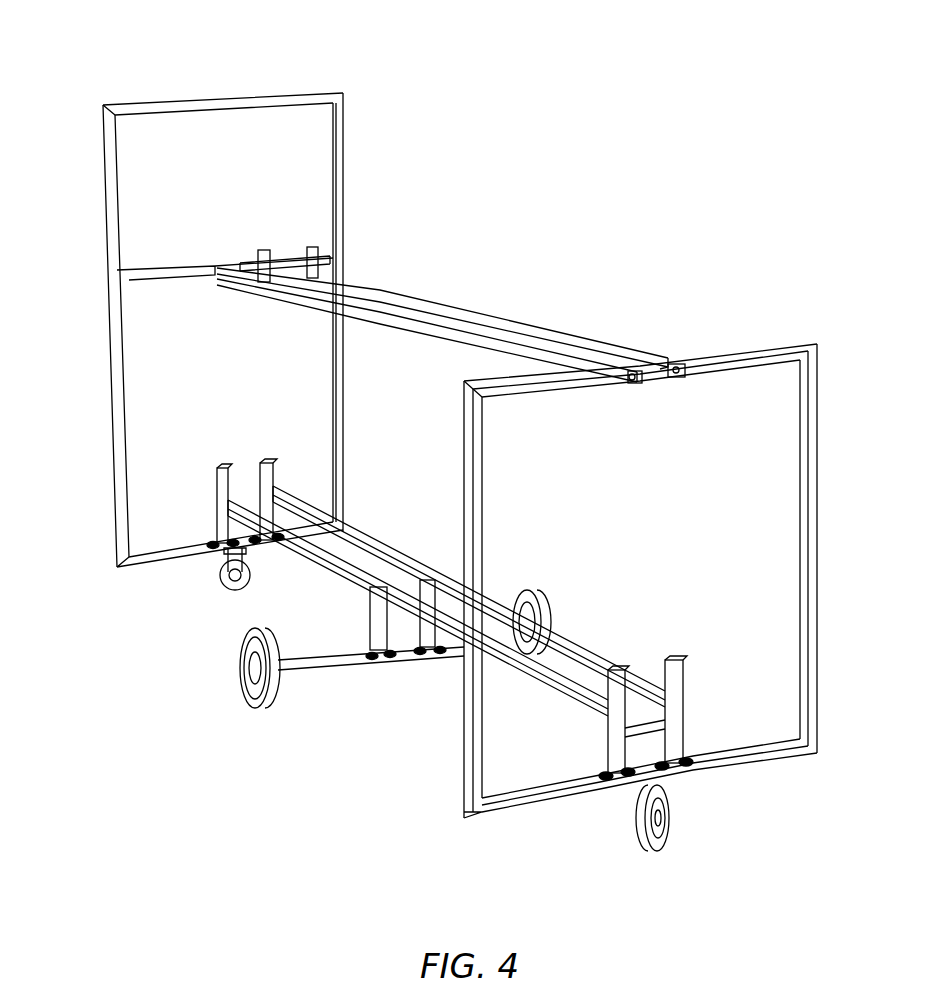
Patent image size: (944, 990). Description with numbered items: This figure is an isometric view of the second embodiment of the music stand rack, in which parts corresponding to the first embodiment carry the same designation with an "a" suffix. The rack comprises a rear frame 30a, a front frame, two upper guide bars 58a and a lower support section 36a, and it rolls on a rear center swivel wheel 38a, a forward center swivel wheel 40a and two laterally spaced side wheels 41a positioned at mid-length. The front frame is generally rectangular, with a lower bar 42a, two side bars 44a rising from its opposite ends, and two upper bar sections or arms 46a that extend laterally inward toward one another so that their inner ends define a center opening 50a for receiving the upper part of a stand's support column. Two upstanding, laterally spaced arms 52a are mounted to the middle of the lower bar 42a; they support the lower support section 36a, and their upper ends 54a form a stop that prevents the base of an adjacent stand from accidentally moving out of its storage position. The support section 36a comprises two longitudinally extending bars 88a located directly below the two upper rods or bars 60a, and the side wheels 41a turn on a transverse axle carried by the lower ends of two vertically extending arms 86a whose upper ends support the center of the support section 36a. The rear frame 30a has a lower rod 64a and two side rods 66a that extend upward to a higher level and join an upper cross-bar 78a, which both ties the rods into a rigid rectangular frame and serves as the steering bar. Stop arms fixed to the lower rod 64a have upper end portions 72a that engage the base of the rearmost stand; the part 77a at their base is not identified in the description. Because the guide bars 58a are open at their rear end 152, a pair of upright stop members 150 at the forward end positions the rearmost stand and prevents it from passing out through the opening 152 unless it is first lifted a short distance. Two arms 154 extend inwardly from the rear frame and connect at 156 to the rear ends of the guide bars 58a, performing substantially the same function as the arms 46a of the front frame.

The rear frame 30a is at (104, 394).
The lower support section 36a is at (379, 532).
The rear center swivel mounted ground support wheel 38a is at (243, 590).
The forward center swivel mounted ground support wheel 40a is at (657, 851).
The side wheels 41a is at (262, 710).
The lower bar 42a is at (518, 806).
The side bars 44a is at (813, 672).
The upper bar sections or arms 46a is at (517, 388).
The center opening 50a is at (647, 378).
The upstanding arms 52a is at (683, 732).
The upper ends of arms 54a is at (684, 680).
The upper guide bars 58a is at (518, 326).
The upper rods or bars 60a is at (622, 352).
The lower rod 64a is at (152, 560).
The side rods 66a is at (344, 178).
The upper end portions of stop arms 72a is at (222, 466).
The post mounting feet 77a is at (221, 512).
The upper cross-bar 78a is at (247, 100).
The vertically extending arms 86a is at (372, 614).
The longitudinally extending bars 88a is at (557, 677).
The upright stop members 150 is at (306, 250).
The open rear end of guide rods 152 is at (233, 265).
The arms 154 is at (323, 250).
The connection of arms to guide rods 156 is at (217, 277).